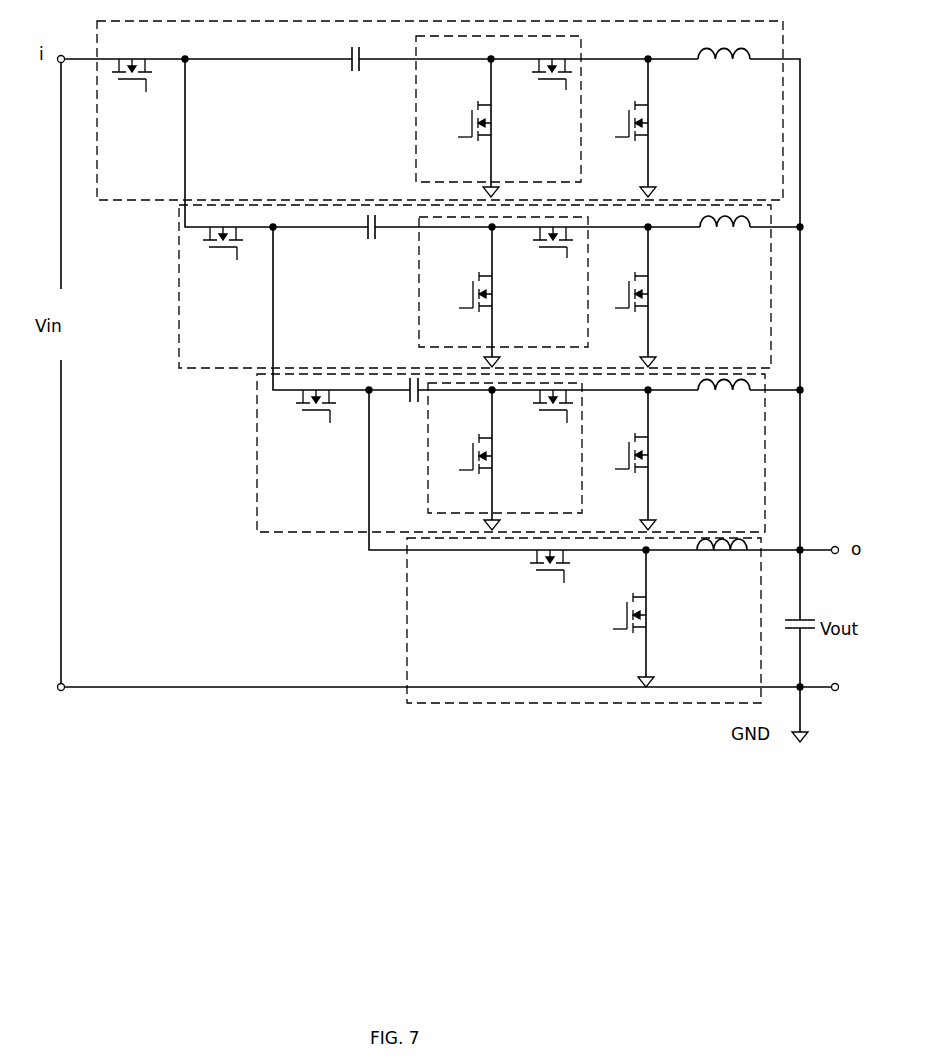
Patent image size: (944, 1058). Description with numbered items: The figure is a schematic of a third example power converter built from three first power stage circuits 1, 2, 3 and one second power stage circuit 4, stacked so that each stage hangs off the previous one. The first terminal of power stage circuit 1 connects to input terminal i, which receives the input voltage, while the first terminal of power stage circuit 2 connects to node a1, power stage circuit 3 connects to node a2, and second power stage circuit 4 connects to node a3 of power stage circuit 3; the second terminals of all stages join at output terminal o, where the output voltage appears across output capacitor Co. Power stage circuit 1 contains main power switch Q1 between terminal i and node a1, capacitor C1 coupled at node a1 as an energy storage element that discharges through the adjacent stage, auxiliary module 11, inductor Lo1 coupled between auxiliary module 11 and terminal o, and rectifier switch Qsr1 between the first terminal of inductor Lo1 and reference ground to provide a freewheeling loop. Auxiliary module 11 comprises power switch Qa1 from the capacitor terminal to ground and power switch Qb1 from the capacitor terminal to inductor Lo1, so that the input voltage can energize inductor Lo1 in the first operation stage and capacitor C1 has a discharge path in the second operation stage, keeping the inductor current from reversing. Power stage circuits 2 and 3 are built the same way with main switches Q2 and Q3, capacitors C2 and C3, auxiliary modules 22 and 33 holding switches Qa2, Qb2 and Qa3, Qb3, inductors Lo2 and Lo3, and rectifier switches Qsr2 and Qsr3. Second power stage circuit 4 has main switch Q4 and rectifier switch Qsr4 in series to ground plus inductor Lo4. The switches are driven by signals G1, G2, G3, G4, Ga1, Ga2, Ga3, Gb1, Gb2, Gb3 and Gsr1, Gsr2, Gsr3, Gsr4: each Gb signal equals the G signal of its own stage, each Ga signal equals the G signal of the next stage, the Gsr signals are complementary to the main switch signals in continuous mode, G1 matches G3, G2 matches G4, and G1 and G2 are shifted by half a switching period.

The power stage circuit 1 is at (143, 202).
The power stage circuit 2 is at (195, 367).
The power stage circuit 3 is at (283, 530).
The second power stage circuit 4 is at (407, 624).
The auxiliary module 11 is at (413, 135).
The auxiliary module 22 is at (418, 313).
The auxiliary module 33 is at (427, 497).
The power switch Q1 is at (132, 59).
The power switch Q2 is at (223, 227).
The power switch Q3 is at (303, 405).
The power switch Q4 is at (532, 560).
The driving signal G1 is at (150, 97).
The driving signal G2 is at (240, 265).
The driving signal G3 is at (332, 428).
The driving signal G4 is at (559, 588).
The node a1 is at (190, 50).
The node a2 is at (284, 239).
The node a3 is at (359, 400).
The capacitor C1 is at (343, 73).
The capacitor C2 is at (361, 240).
The capacitor C3 is at (404, 402).
The power switch Qa1 is at (503, 98).
The power switch Qa2 is at (505, 268).
The power switch Qa3 is at (505, 430).
The power switch Qb1 is at (554, 57).
The power switch Qb2 is at (535, 239).
The power switch Qb3 is at (535, 401).
The driving signal Ga1 is at (447, 124).
The driving signal Ga2 is at (448, 296).
The driving signal Ga3 is at (452, 458).
The driving signal Gb1 is at (560, 97).
The driving signal Gb2 is at (560, 266).
The driving signal Gb3 is at (562, 428).
The power switch Qsr1 is at (663, 98).
The power switch Qsr2 is at (663, 268).
The power switch Qsr3 is at (663, 430).
The power switch Qsr4 is at (659, 590).
The driving signal Gsr1 is at (612, 150).
The driving signal Gsr2 is at (616, 319).
The driving signal Gsr3 is at (607, 457).
The driving signal Gsr4 is at (600, 642).
The inductor Lo1 is at (724, 41).
The inductor Lo2 is at (725, 235).
The inductor Lo3 is at (724, 397).
The inductor Lo4 is at (722, 559).
The output capacitor Co is at (789, 629).